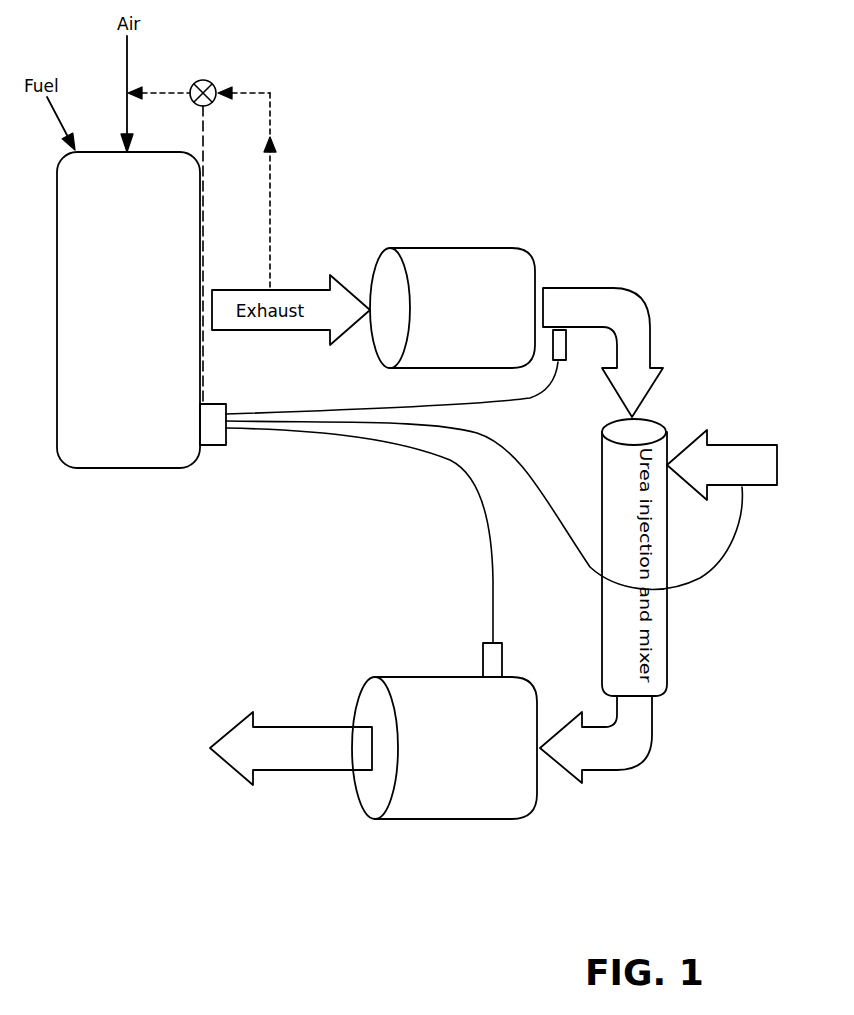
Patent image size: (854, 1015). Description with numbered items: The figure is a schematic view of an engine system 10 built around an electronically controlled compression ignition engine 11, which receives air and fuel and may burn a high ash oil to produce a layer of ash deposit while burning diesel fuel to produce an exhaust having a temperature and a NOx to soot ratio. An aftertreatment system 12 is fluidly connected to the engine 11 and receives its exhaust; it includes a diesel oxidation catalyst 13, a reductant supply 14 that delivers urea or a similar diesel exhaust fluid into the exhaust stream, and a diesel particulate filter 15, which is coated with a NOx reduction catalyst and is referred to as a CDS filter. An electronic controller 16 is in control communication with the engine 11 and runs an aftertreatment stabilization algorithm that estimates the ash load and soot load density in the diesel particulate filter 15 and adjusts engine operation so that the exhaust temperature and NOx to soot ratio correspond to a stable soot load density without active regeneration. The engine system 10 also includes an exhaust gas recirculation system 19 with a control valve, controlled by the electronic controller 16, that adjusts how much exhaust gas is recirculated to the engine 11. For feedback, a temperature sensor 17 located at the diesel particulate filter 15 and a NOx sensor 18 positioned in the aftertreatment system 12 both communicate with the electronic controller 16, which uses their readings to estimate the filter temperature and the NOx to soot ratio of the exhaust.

The engine system 10 is at (653, 178).
The electronically controlled compression ignition engine 11 is at (128, 468).
The aftertreatment system 12 is at (653, 322).
The diesel oxidation catalyst 13 is at (448, 248).
The reductant supply 14 is at (750, 445).
The diesel particulate filter 15 is at (438, 677).
The electronic controller 16 is at (210, 447).
The temperature sensor 17 is at (497, 643).
The NOx sensor 18 is at (562, 362).
The exhaust gas recirculation system 19 is at (271, 200).